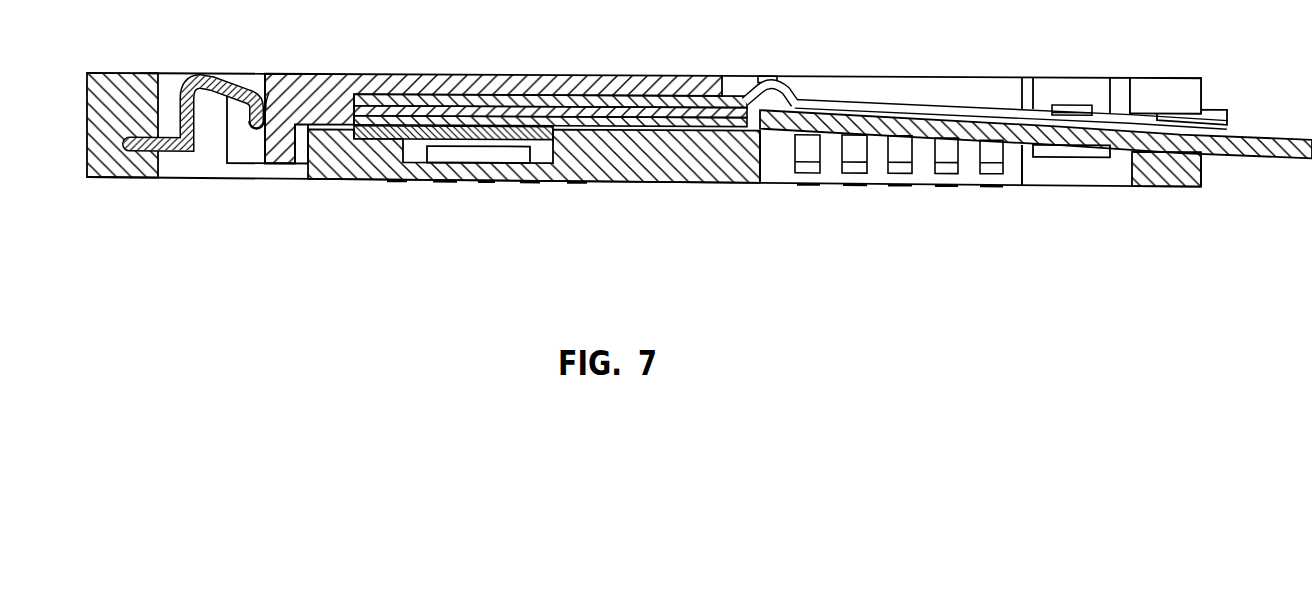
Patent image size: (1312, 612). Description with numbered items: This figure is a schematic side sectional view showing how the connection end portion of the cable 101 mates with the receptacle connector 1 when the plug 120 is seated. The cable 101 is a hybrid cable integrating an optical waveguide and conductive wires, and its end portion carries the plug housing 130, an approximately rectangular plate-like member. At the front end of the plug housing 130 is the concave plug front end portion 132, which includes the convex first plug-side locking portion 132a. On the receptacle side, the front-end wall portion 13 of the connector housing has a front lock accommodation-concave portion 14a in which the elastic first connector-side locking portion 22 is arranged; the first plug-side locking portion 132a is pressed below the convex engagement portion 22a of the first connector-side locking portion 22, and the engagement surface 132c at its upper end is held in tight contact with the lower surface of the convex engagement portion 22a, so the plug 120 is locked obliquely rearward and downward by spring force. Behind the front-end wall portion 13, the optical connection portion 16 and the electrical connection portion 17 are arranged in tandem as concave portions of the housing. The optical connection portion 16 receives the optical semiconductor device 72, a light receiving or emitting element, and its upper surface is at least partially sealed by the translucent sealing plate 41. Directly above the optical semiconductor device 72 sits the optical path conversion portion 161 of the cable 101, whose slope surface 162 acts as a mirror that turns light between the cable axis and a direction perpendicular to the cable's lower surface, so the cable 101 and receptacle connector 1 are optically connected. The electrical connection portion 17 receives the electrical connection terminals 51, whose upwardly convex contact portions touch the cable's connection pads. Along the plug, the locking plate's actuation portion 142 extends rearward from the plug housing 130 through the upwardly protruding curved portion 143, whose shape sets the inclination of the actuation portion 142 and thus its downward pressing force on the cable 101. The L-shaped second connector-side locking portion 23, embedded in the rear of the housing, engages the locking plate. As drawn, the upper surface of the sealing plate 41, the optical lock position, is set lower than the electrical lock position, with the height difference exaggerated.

The receptacle connector 1 is at (668, 211).
The front-end wall portion 13 is at (87, 117).
The front lock accommodation-concave portion 14a is at (162, 71).
The optical connection portion 16 is at (414, 155).
The electrical connection portion 17 is at (775, 170).
The first connector-side locking portion 22 is at (195, 66).
The convex engagement portion 22a is at (250, 135).
The second connector-side locking portion 23 is at (1086, 80).
The sealing plate 41 is at (546, 137).
The electrical connection terminals 51 is at (937, 160).
The optical semiconductor device 72 is at (455, 158).
The cable 101 is at (1263, 130).
The plug 120 is at (620, 37).
The plug housing 130 is at (363, 72).
The concave plug front end portion 132 is at (260, 72).
The first plug-side locking portion 132a is at (262, 133).
The engagement surface 132c is at (270, 102).
The actuation portion 142 is at (822, 95).
The curved portion 143 is at (777, 73).
The optical path conversion portion 161 is at (482, 95).
The slope surface 162 is at (484, 118).